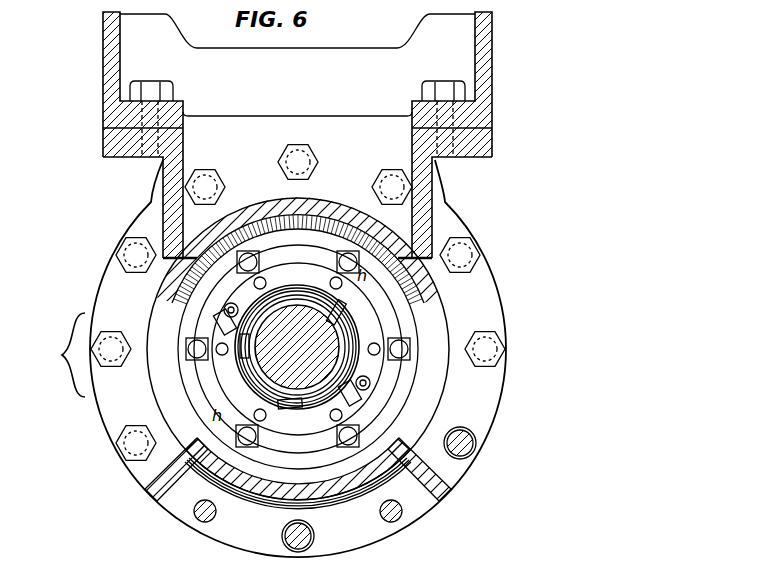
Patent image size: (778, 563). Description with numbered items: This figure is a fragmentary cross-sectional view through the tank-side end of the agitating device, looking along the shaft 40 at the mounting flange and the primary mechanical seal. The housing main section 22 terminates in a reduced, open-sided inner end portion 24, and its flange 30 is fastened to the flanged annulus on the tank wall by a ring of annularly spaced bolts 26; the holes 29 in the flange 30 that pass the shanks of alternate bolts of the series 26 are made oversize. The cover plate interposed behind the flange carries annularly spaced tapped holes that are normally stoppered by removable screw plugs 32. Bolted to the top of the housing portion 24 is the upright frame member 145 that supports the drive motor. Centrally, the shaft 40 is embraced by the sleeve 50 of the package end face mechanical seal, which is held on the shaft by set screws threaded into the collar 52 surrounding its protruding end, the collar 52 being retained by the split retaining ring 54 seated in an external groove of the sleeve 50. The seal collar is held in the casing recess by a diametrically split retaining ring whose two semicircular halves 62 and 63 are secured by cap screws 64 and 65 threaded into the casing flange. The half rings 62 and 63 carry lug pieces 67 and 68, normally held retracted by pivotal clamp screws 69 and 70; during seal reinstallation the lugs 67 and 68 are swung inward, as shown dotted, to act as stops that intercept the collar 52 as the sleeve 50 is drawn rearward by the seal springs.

The upright frame member 145 is at (108, 31).
The main section 22 is at (51, 355).
The reduced open sided inner end portion 24 is at (357, 490).
The bolts 26 is at (383, 178).
The holes 29 is at (292, 147).
The flange 30 is at (501, 386).
The screw plugs 32 is at (341, 253).
The shaft 40 is at (318, 355).
The sleeve 50 is at (333, 317).
The collar 52 is at (359, 438).
The split retaining ring 54 is at (246, 340).
The half ring 62 is at (330, 281).
The half ring 63 is at (267, 417).
The cap screw 64 is at (264, 278).
The cap screw 65 is at (334, 422).
The lug piece 67 is at (220, 312).
The lug piece 68 is at (360, 397).
The pivotal clamp screw 69 is at (229, 304).
The pivotal clamp screw 70 is at (370, 387).